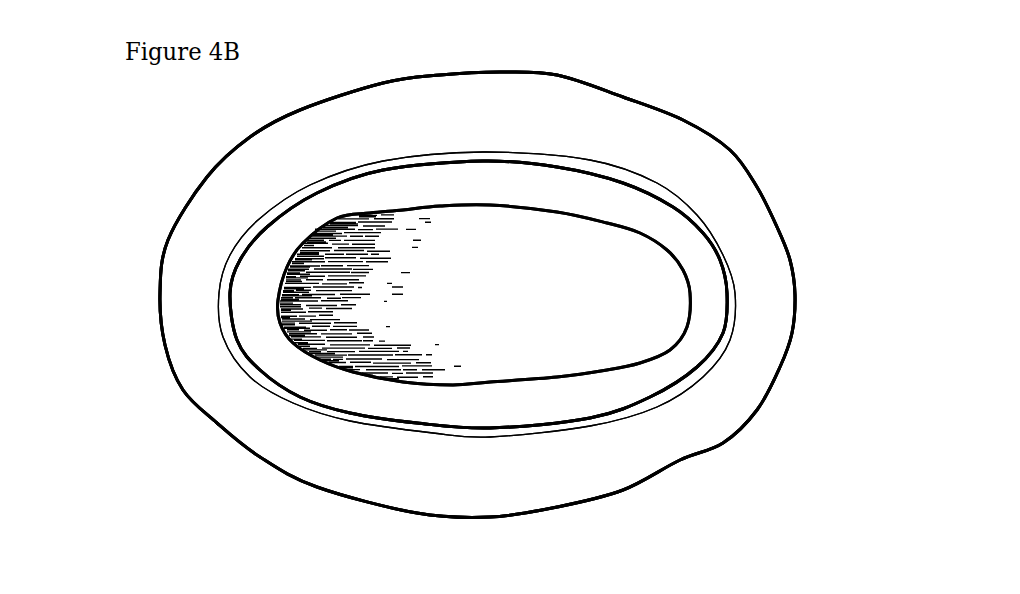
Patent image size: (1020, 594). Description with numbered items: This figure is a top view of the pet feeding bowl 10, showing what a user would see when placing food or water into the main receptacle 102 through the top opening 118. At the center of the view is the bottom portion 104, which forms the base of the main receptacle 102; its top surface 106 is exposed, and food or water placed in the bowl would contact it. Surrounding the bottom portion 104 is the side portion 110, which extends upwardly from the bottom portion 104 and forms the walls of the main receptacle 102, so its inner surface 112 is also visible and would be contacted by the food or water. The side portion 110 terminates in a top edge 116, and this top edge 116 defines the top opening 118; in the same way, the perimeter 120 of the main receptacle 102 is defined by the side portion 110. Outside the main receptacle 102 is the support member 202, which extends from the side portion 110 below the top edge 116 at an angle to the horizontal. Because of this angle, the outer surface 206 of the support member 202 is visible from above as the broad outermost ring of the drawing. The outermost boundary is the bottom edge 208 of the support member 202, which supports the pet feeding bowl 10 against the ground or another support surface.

The pet feeding bowl 10 is at (136, 126).
The main receptacle 102 is at (430, 235).
The bottom portion 104 is at (606, 264).
The top surface 106 is at (505, 300).
The side portion 110 is at (606, 180).
The inner surface 112 is at (502, 195).
The top edge 116 is at (330, 187).
The top opening 118 is at (649, 171).
The perimeter 120 is at (225, 244).
The support member 202 is at (770, 236).
The outer surface 206 is at (510, 490).
The bottom edge 208 is at (218, 427).